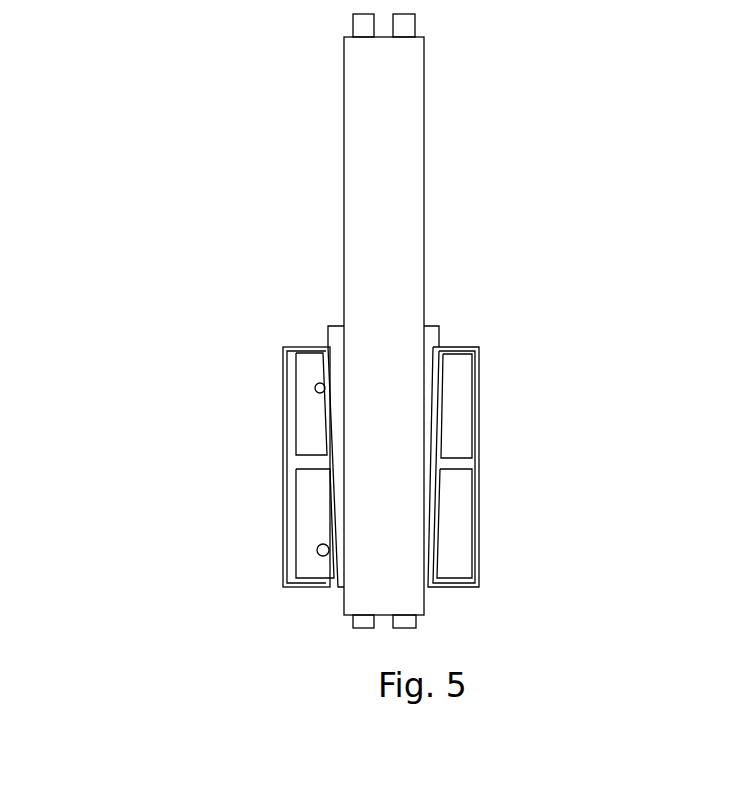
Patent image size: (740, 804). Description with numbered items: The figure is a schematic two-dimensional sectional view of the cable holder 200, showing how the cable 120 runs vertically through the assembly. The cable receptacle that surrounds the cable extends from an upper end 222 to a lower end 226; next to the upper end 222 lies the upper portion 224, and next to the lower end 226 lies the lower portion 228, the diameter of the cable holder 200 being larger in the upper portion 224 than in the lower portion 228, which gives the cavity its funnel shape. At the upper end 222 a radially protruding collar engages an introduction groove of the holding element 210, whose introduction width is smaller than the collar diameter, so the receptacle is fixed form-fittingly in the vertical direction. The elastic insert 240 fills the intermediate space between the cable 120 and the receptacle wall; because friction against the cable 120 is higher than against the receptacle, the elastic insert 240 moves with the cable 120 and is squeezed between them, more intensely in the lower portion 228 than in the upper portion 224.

The cable holder 200 is at (194, 147).
The cable 120 is at (398, 89).
The upper end 222 is at (321, 339).
The elastic insert 240 is at (425, 326).
The holding element 210 is at (478, 347).
The upper portion 224 is at (441, 397).
The lower portion 228 is at (436, 521).
The lower end 226 is at (428, 592).